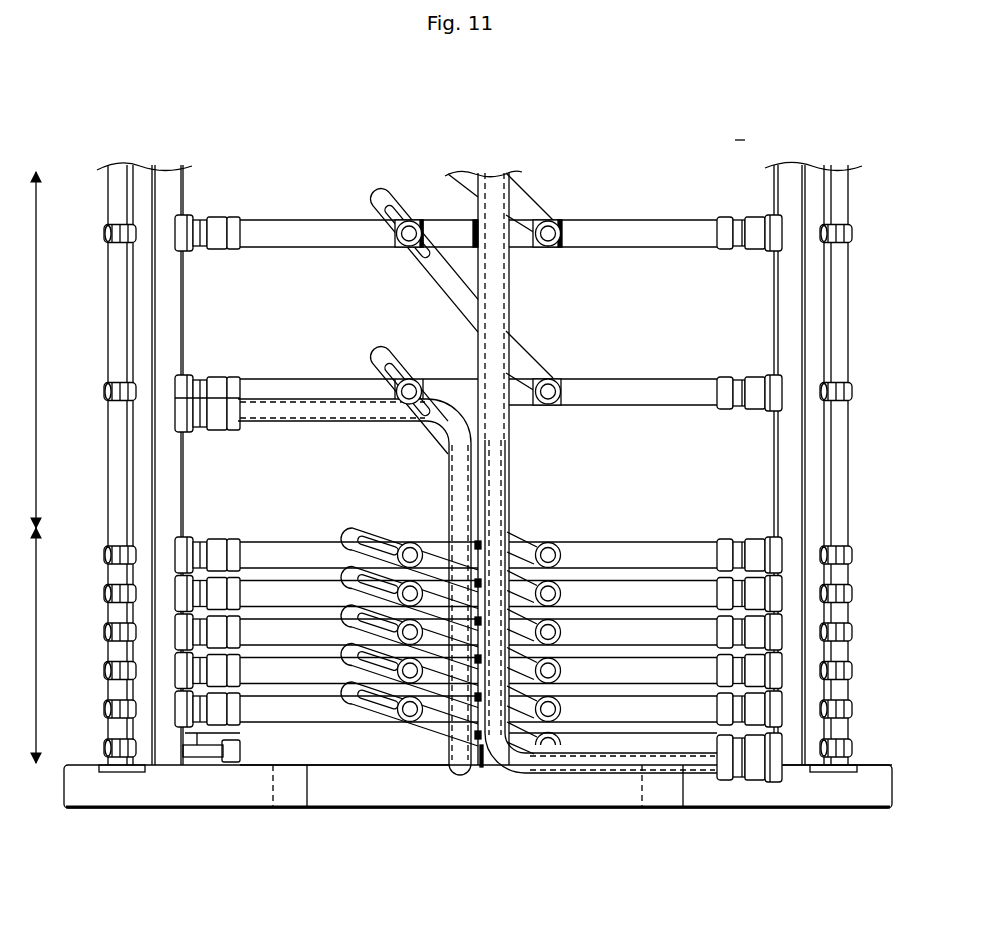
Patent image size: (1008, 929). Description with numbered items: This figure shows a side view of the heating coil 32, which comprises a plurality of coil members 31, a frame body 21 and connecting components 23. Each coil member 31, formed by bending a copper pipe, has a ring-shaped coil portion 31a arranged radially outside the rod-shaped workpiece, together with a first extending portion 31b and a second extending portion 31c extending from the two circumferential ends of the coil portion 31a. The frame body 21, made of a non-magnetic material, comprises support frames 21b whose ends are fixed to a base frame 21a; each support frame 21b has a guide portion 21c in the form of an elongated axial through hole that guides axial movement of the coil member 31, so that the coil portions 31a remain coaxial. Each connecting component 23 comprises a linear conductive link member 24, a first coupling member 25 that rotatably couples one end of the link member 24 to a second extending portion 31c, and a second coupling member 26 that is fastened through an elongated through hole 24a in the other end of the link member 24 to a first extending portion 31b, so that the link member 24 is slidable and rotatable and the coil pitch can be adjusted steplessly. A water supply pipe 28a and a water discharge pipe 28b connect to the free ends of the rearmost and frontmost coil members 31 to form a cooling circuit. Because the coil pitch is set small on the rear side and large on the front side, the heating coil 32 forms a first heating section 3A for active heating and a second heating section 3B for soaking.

The frame body 21 is at (205, 818).
The base frame 21a is at (850, 790).
The support frame 21b is at (118, 318).
The guide portion 21c is at (128, 204).
The connecting component 23 is at (856, 246).
The link member 24 is at (457, 309).
The through hole 24a is at (385, 195).
The first coupling member 25 is at (548, 249).
The second coupling member 26 is at (404, 244).
The water supply pipe 28a is at (325, 415).
The water discharge pipe 28b is at (497, 470).
The coil member 31 is at (609, 216).
The coil portion 31a is at (401, 768).
The first extending portion 31b is at (277, 228).
The second extending portion 31c is at (668, 230).
The heating coil 32 is at (742, 135).
The first heating section 3A is at (20, 645).
The second heating section 3B is at (20, 350).